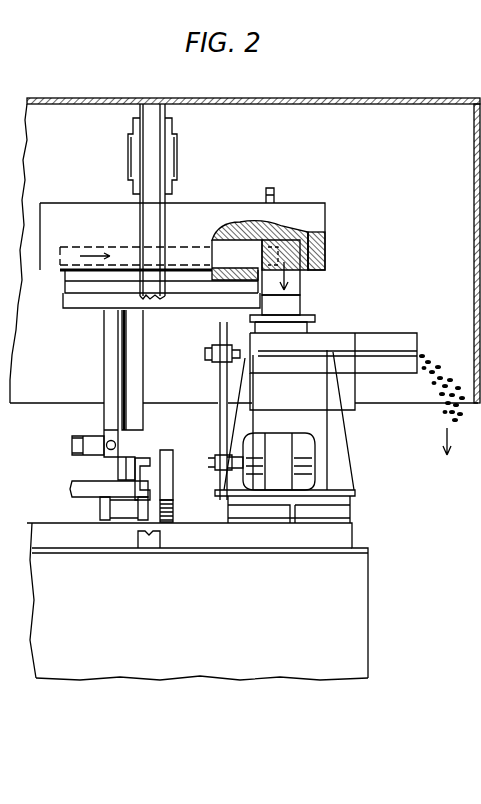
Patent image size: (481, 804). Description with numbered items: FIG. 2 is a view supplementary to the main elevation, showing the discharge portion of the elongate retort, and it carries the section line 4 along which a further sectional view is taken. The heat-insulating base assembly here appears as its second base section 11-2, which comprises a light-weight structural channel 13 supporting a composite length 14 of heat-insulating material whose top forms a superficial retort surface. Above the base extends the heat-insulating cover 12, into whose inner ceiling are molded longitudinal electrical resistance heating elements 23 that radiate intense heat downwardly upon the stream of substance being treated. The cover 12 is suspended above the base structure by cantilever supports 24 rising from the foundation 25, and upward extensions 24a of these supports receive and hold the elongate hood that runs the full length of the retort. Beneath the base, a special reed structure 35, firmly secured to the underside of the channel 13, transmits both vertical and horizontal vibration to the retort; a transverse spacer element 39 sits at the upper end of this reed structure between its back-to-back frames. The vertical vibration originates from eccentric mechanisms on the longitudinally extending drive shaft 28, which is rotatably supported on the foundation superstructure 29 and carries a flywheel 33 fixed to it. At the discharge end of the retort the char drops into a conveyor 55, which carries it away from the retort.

The section line 4- 4 is at (378, 130).
The base assembly section 11-2 is at (88, 320).
The heat-insulating cover 12 is at (299, 215).
The structural channel 13 is at (75, 303).
The composite length of heat-insulation material 14 is at (75, 283).
The heating element 23 is at (266, 196).
The cantilever support 24 is at (150, 296).
The upward extension of cantilever support 24a is at (148, 150).
The foundation 25 is at (192, 660).
The drive shaft 28 is at (178, 486).
The foundation superstructure 29 is at (76, 530).
The flywheel 33 is at (176, 508).
The reed structure 35 is at (112, 380).
The transverse spacer element 39 is at (128, 326).
The conveyor 55 is at (352, 334).